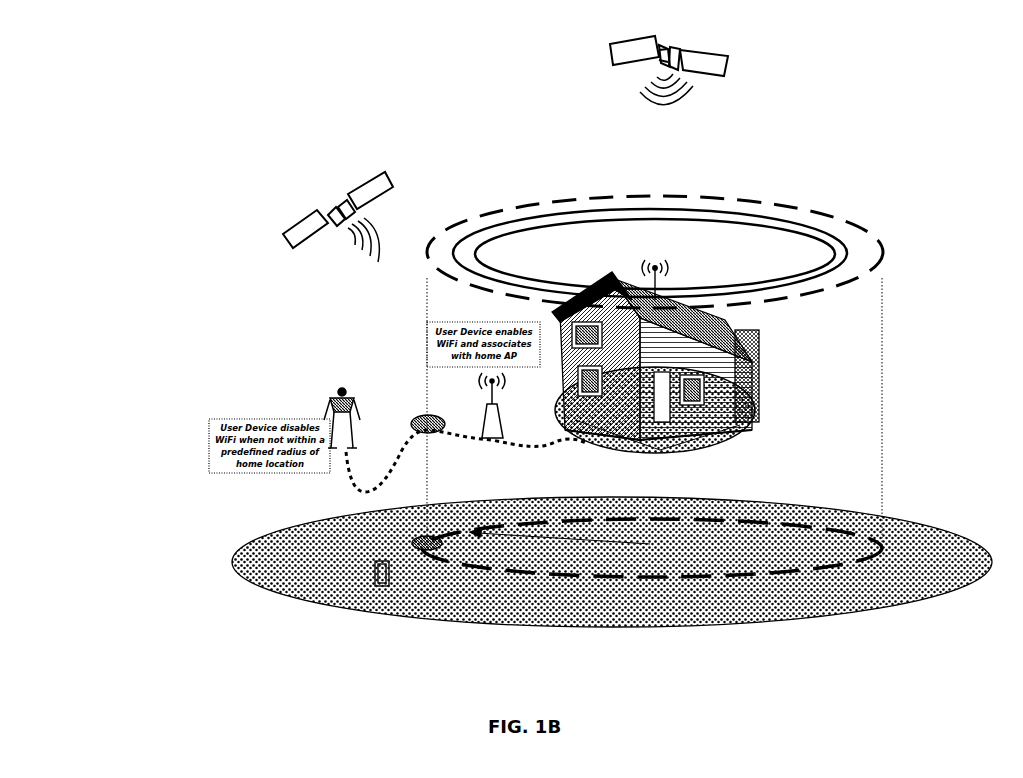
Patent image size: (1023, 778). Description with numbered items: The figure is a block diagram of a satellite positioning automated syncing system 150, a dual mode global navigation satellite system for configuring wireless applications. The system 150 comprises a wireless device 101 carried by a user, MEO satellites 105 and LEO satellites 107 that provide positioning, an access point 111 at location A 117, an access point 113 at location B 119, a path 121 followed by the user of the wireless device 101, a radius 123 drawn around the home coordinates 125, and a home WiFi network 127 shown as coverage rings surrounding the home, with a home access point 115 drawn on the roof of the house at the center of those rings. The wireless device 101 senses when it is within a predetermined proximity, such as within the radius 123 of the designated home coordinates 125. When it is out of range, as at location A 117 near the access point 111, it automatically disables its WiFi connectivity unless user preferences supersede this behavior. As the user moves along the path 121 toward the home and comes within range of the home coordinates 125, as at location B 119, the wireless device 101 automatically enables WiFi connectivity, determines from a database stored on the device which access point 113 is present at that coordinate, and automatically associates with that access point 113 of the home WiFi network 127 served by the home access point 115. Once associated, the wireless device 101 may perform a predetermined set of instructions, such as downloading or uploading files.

The satellite positioning automated syncing system 150 is at (178, 90).
The MEO satellites 105 is at (746, 69).
The LEO satellites 107 is at (299, 207).
The home WiFi network 127 is at (681, 364).
The home WiFi access point 115 is at (645, 272).
The access point 111 is at (330, 412).
The access point 113 is at (482, 406).
The path 121 is at (556, 450).
The location B 119 is at (490, 442).
The location A 117 is at (345, 450).
The radius 123 is at (652, 548).
The home coordinates 125 is at (727, 549).
The wireless device 101 is at (373, 569).